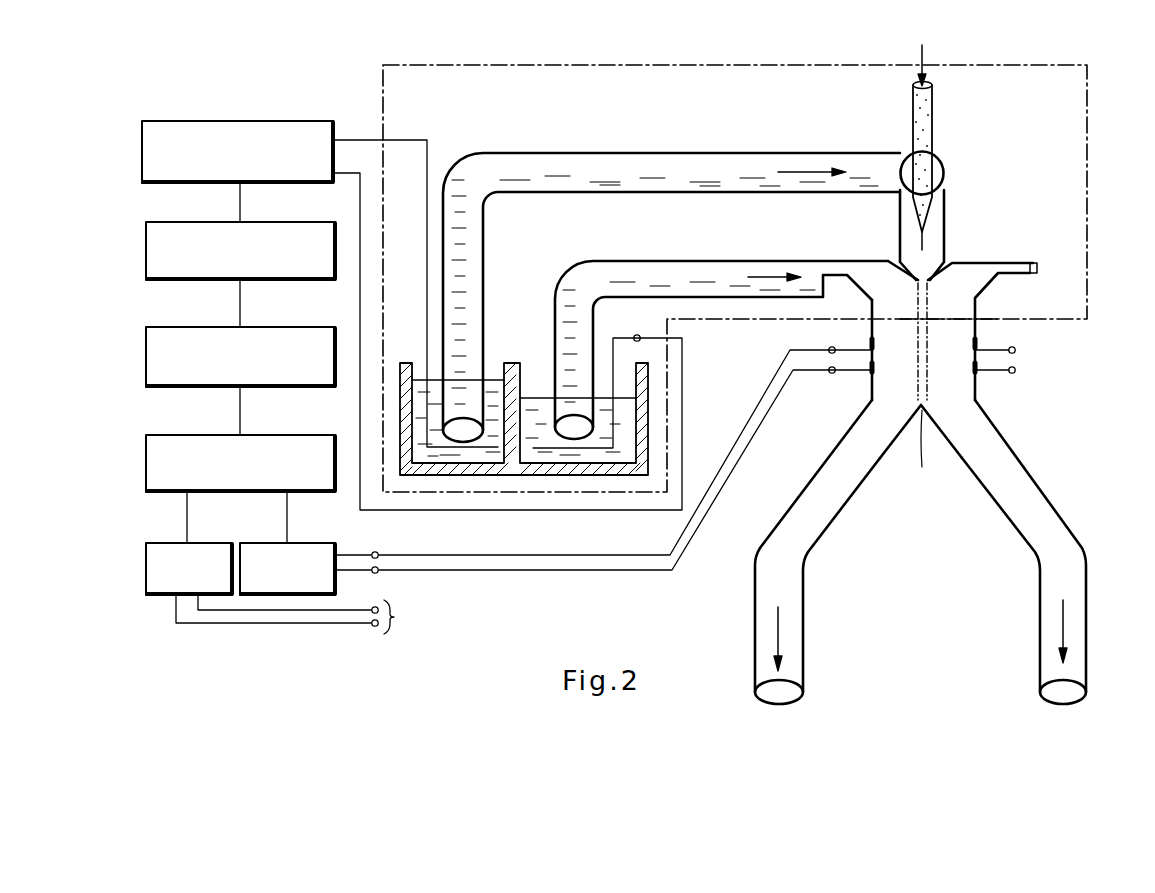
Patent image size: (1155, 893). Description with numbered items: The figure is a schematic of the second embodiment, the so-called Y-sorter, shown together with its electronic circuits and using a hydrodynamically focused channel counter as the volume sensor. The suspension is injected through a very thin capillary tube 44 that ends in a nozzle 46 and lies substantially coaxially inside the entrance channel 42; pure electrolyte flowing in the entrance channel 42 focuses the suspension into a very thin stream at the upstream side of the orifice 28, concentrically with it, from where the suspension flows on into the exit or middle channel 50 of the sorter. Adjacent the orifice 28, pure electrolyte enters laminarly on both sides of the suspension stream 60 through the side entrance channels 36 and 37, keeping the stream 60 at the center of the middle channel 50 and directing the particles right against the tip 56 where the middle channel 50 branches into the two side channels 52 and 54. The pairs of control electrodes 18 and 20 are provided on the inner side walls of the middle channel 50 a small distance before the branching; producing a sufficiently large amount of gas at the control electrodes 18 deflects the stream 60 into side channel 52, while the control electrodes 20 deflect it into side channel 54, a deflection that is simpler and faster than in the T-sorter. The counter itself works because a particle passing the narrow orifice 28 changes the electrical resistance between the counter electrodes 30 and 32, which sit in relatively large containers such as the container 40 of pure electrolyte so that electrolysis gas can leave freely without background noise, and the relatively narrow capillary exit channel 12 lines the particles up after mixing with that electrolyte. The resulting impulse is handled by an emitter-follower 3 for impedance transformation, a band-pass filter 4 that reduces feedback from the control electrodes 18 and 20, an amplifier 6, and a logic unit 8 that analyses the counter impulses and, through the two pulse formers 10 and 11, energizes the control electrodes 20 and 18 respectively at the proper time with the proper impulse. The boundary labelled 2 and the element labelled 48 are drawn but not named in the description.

The droplet generator unit boundary 2 is at (1087, 97).
The emitter-follower 3 is at (192, 183).
The band-pass filter 4 is at (190, 280).
The amplifier 6 is at (185, 387).
The logic unit 8 is at (172, 492).
The pulse former 10 is at (207, 540).
The pulse former 11 is at (318, 543).
The capillary exit channel 12 is at (960, 319).
The control electrodes 18 is at (850, 350).
The control electrodes 20 is at (1055, 405).
The orifice 28 is at (930, 272).
The counter electrode 30 is at (613, 351).
The counter electrode 32 is at (413, 138).
The side entrance channel 36 is at (775, 268).
The side entrance channel 37 is at (1033, 274).
The container 40 is at (640, 380).
The entrance channel 42 is at (778, 160).
The capillary tube 44 is at (933, 103).
The nozzle 46 is at (925, 232).
The liquid tank 48 is at (408, 362).
The middle channel 50 is at (943, 333).
The side channel 52 is at (1060, 545).
The side channel 54 is at (806, 547).
The tip 56 is at (927, 393).
The suspension stream 60 is at (918, 398).